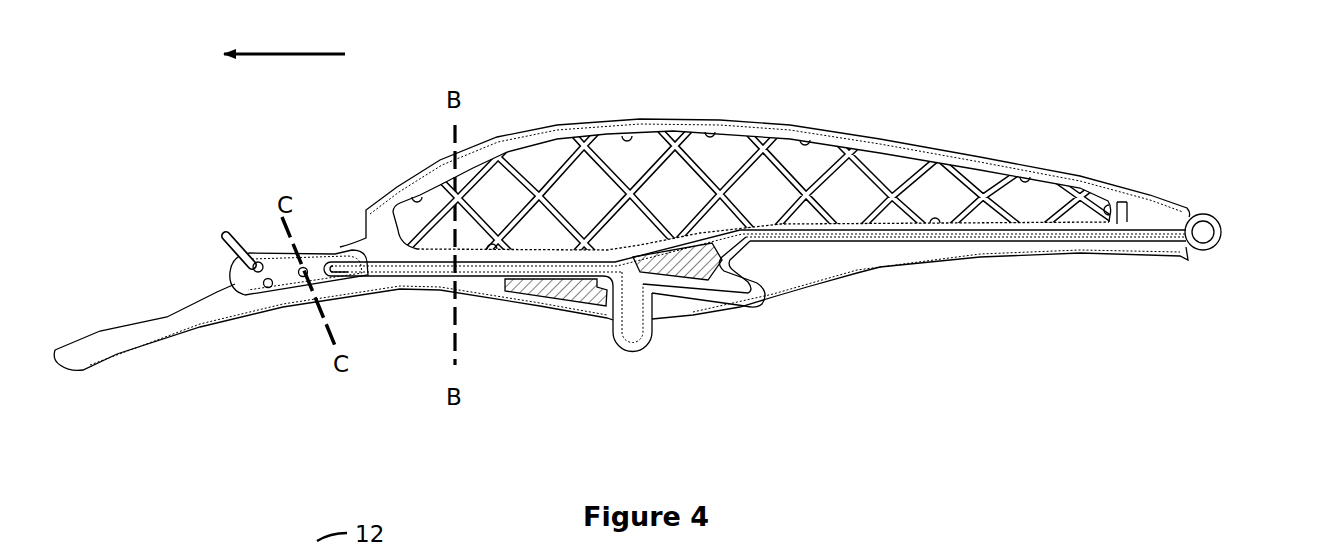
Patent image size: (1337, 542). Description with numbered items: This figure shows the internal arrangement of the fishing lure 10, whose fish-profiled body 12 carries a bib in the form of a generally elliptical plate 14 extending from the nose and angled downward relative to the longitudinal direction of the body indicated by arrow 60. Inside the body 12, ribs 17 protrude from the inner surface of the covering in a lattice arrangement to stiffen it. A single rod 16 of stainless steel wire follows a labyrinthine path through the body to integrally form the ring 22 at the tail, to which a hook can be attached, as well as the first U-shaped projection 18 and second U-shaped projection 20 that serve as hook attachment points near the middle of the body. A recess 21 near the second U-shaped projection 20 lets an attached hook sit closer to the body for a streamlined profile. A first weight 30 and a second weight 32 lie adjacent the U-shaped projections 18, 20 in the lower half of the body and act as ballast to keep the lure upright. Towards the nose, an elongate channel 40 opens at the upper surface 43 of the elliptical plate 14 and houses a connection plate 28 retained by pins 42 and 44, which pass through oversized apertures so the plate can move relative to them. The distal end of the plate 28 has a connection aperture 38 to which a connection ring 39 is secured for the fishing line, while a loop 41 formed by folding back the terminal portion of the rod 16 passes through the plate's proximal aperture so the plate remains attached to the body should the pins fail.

The fishing lure 10 is at (191, 113).
The body 12 is at (793, 122).
The elliptical plate 14 is at (123, 368).
The rod 16 is at (412, 273).
The ribs 17 is at (562, 164).
The first U-shaped projection 18 is at (633, 353).
The second U-shaped projection 20 is at (730, 313).
The recess 21 is at (789, 292).
The ring 22 is at (1224, 214).
The plate 28 is at (278, 252).
The first weight 30 is at (562, 292).
The second weight 32 is at (698, 273).
The connection aperture 38 is at (248, 270).
The connection ring 39 is at (222, 238).
The elongate channel 40 is at (357, 278).
The loop 41 is at (333, 258).
The pin 42 is at (308, 257).
The upper surface 43 is at (150, 313).
The pin 44 is at (270, 285).
The arrow 60 is at (304, 54).